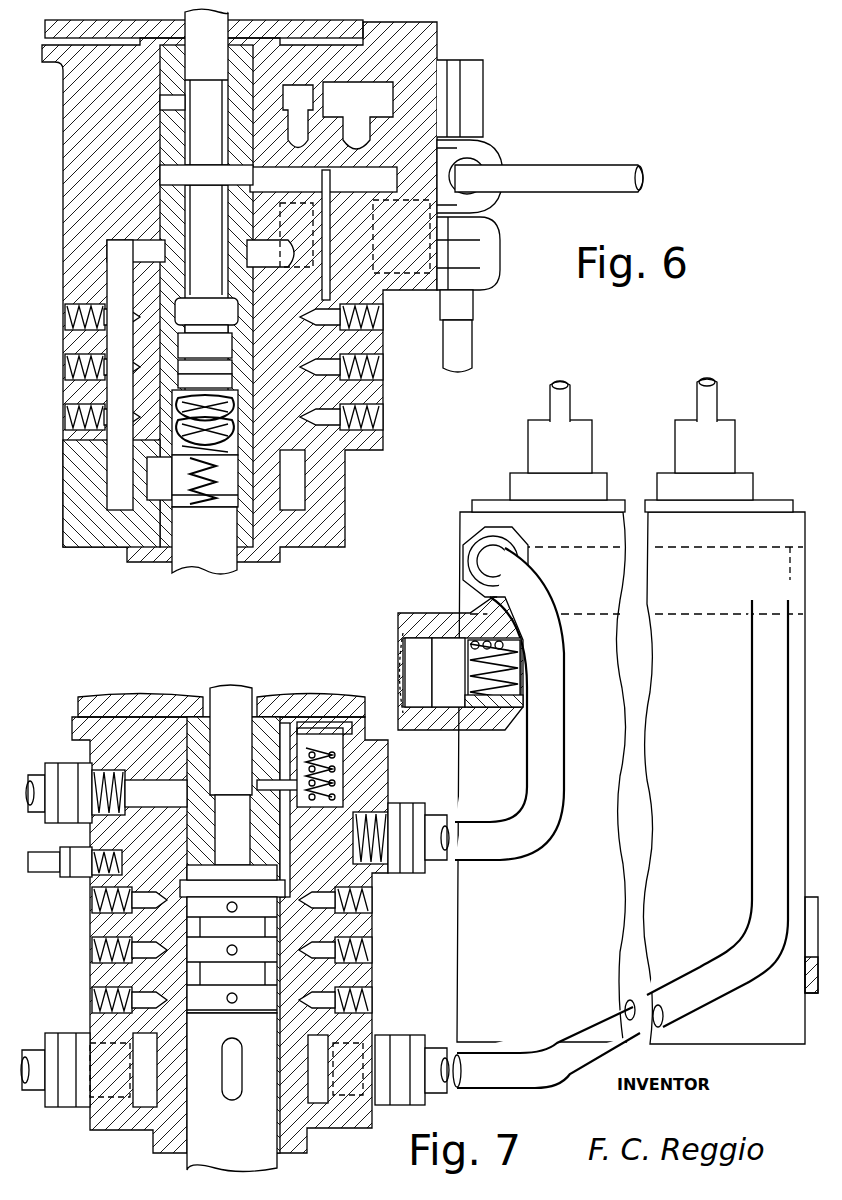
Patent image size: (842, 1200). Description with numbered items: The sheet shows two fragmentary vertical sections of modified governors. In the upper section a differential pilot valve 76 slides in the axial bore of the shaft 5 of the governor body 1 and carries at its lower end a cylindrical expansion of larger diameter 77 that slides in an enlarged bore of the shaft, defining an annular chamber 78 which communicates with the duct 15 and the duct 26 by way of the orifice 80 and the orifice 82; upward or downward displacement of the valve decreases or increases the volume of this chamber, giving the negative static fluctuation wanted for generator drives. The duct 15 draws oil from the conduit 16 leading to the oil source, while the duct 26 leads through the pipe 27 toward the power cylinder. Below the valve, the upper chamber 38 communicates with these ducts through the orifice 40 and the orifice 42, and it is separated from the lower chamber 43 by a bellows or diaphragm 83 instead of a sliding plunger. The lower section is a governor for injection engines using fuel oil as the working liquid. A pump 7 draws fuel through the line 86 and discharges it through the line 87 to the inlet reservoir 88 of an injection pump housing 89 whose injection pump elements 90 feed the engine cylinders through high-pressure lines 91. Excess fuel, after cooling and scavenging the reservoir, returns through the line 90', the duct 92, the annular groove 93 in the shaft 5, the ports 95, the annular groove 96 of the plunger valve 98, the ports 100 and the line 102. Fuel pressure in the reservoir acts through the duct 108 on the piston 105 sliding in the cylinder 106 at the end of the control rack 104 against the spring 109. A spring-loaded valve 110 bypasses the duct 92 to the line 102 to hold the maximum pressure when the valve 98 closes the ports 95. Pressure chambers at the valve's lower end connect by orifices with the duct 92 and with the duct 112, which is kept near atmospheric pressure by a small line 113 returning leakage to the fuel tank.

In FIG. 6, the valve housing 1 is at (78, 121).
In FIG. 6, the differential pilot valve 76 is at (205, 133).
In FIG. 6, the duct 15 is at (124, 247).
In FIG. 6, the annular chamber 78 is at (178, 305).
In FIG. 6, the orifice 80 is at (196, 322).
In FIG. 6, the cylindrical expansion of larger diameter 77 is at (193, 344).
In FIG. 6, the orifice 40 is at (193, 370).
In FIG. 6, the upper chamber 38 is at (182, 380).
In FIG. 6, the bellows or diaphragm 83 is at (178, 450).
In FIG. 6, the chamber 43 is at (182, 470).
In FIG. 6, the shaft 5 is at (156, 568).
In FIG. 7, the shaft 5 is at (200, 1152).
In FIG. 6, the orifice 82 is at (308, 330).
In FIG. 6, the orifice 42 is at (308, 379).
In FIG. 6, the duct 26 is at (462, 141).
In FIG. 6, the pipe 27 is at (560, 174).
In FIG. 6, the conduit 16 is at (458, 347).
In FIG. 7, the ports 100 is at (194, 714).
In FIG. 7, the plunger valve 98 is at (240, 716).
In FIG. 7, the line 102 is at (38, 790).
In FIG. 7, the annular groove 96 is at (185, 888).
In FIG. 7, the small line 113 is at (44, 870).
In FIG. 7, the ports 95 is at (118, 876).
In FIG. 7, the duct 112 is at (147, 926).
In FIG. 7, the line 86 is at (32, 1074).
In FIG. 7, the pump 7 is at (144, 1094).
In FIG. 7, the spring-loaded valve 110 is at (344, 782).
In FIG. 7, the duct 92 is at (298, 842).
In FIG. 7, the annular groove 93 is at (380, 905).
In FIG. 7, the inlet reservoir 88 is at (722, 578).
In FIG. 7, the injection pump housing 89 is at (727, 528).
In FIG. 7, the injection pump elements 90 is at (682, 443).
In FIG. 7, the high-pressure lines 91 is at (700, 378).
In FIG. 7, the duct 108 is at (452, 600).
In FIG. 7, the cylinder 106 is at (423, 650).
In FIG. 7, the piston 105 is at (449, 693).
In FIG. 7, the control rack 104 is at (503, 675).
In FIG. 7, the spring 109 is at (478, 702).
In FIG. 7, the line 90' is at (509, 720).
In FIG. 7, the line 87 is at (517, 1078).